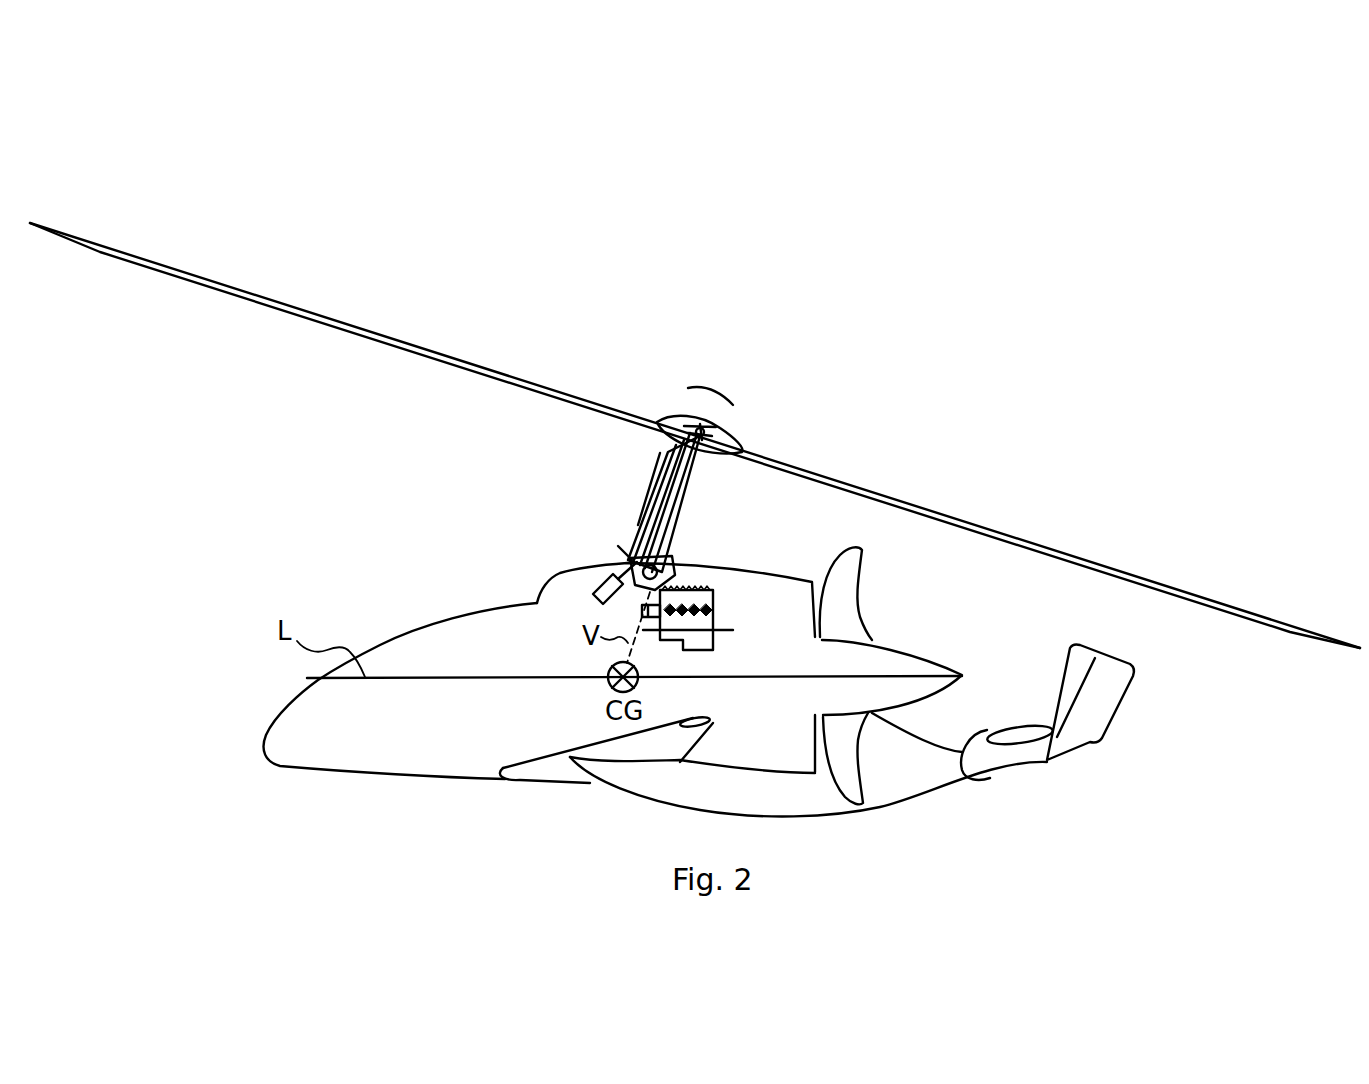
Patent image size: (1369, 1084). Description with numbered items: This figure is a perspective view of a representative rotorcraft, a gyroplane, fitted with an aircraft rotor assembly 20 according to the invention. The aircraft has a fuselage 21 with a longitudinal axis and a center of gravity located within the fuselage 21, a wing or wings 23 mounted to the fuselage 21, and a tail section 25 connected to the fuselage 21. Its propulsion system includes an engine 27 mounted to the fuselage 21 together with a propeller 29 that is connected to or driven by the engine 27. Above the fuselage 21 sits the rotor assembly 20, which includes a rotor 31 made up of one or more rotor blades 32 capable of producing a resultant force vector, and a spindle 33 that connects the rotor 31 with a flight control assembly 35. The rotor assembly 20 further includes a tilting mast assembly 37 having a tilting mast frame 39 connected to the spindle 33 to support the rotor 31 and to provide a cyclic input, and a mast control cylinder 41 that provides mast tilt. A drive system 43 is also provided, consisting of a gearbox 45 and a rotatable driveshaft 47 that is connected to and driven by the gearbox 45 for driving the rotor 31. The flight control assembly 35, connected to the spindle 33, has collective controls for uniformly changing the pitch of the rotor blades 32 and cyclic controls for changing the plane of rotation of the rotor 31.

The aircraft rotor assembly 20 is at (518, 461).
The fuselage 21 is at (321, 770).
The wing 23 is at (541, 783).
The tail section 25 is at (1060, 770).
The engine 27 is at (713, 640).
The propeller 29 is at (858, 573).
The rotor 31 is at (775, 447).
The rotor blades 32 is at (988, 519).
The spindle 33 is at (688, 422).
The flight control assembly 35 is at (632, 498).
The tilting mast assembly 37 is at (734, 516).
The tilting mast frame 39 is at (674, 554).
The mast control cylinder 41 is at (568, 576).
The drive system 43 is at (618, 546).
The gearbox 45 is at (677, 581).
The rotatable driveshaft 47 is at (687, 503).